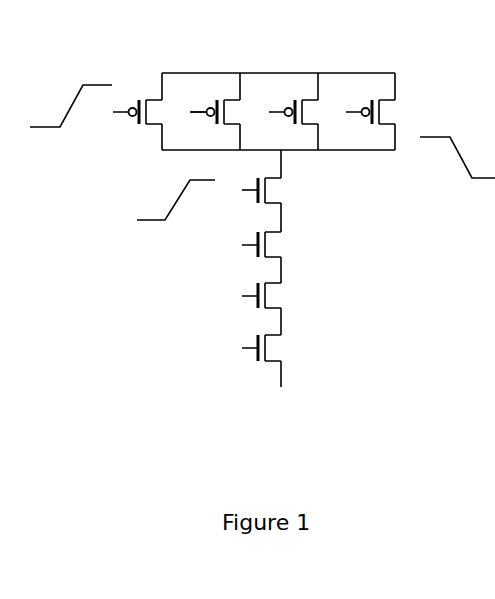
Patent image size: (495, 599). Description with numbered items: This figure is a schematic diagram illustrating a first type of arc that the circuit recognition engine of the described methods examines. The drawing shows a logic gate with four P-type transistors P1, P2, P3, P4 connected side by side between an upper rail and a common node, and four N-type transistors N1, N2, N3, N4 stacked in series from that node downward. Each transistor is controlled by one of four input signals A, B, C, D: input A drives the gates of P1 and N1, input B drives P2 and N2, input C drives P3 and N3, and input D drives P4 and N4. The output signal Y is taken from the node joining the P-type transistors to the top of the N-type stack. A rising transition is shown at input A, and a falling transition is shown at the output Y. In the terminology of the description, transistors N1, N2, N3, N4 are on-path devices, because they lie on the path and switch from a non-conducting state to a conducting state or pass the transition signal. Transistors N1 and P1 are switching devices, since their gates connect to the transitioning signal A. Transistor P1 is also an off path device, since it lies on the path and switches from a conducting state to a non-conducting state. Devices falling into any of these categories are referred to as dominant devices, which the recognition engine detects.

The off path device P1 is at (146, 124).
The second PMOS transistor P2 is at (224, 124).
The third PMOS transistor P3 is at (302, 124).
The fourth PMOS transistor P4 is at (377, 124).
The on-path device N1 is at (283, 176).
The on-path device N2 is at (283, 230).
The on-path device N3 is at (283, 282).
The on-path device N4 is at (283, 347).
The input signal A is at (143, 152).
The input signal B is at (215, 181).
The input signal C is at (248, 207).
The input signal D is at (286, 233).
The output signal Y is at (450, 157).